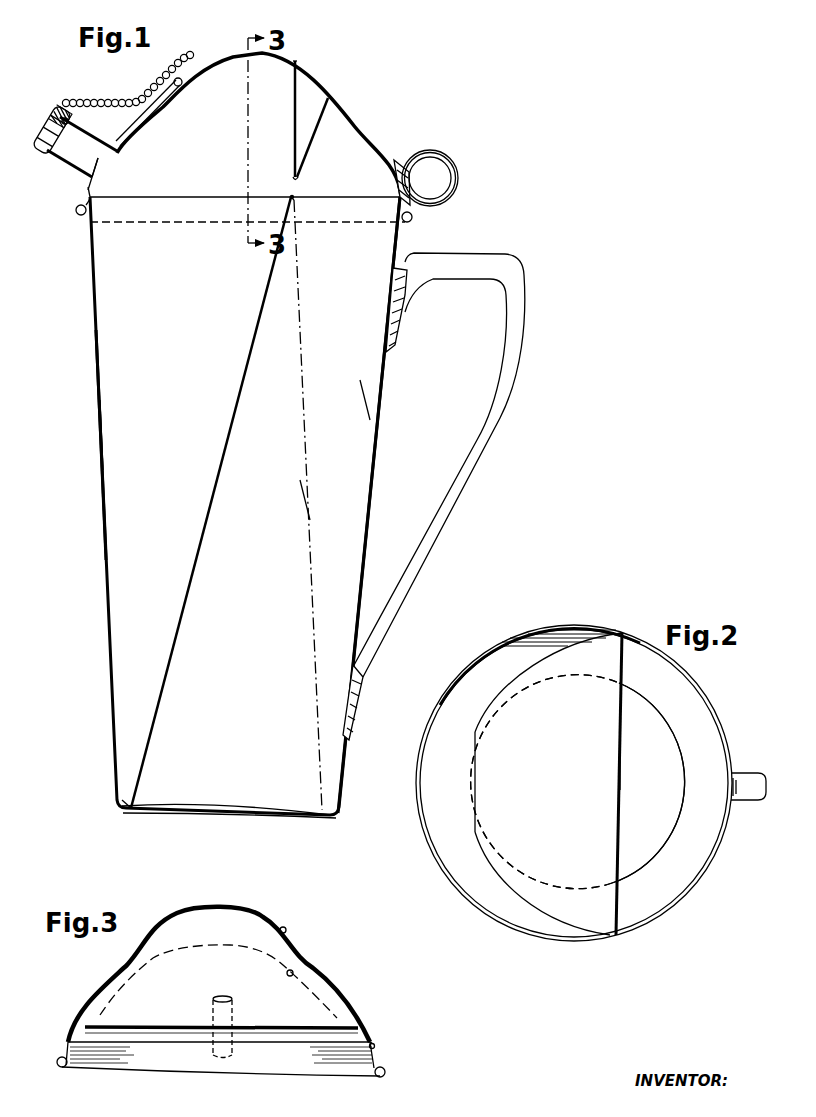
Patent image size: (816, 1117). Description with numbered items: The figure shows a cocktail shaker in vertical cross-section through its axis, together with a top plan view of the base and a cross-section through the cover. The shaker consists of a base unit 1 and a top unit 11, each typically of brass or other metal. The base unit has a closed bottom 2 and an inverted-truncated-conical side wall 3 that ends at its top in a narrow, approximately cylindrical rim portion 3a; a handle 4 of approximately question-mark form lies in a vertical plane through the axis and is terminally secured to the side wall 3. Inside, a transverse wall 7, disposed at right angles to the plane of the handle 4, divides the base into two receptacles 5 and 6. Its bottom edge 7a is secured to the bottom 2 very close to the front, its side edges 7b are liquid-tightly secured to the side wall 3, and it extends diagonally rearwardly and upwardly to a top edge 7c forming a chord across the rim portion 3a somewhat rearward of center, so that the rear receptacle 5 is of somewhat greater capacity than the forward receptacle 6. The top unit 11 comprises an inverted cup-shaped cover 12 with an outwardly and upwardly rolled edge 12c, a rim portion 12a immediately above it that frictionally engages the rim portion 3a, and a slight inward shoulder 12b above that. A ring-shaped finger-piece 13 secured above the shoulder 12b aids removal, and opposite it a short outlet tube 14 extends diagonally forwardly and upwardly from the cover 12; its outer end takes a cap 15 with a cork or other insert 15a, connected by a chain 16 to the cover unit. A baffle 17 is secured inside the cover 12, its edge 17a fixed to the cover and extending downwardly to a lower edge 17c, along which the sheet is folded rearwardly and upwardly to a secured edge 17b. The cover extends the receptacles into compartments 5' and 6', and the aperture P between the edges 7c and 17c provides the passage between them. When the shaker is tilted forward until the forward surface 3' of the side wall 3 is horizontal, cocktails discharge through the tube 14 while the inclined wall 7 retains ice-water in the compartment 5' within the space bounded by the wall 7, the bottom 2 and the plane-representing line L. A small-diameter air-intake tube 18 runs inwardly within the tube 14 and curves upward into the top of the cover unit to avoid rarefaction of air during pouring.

In FIG. 1, the base unit 1 is at (92, 543).
In FIG. 2, the base unit 1 is at (636, 620).
In FIG. 1, the closed bottom 2 is at (270, 810).
In FIG. 2, the closed bottom 2 is at (472, 781).
In FIG. 1, the side wall 3 is at (374, 505).
In FIG. 2, the side wall 3 is at (574, 769).
In FIG. 1, the forward surface of the side wall 3' is at (79, 285).
In FIG. 1, the rim portion 3a is at (92, 200).
In FIG. 2, the rim portion 3a is at (540, 625).
In FIG. 1, the handle 4 is at (410, 587).
In FIG. 2, the handle 4 is at (752, 800).
In FIG. 1, the receptacle 5 is at (351, 500).
In FIG. 2, the receptacle 5 is at (672, 789).
In FIG. 1, the compartment 5' is at (389, 395).
In FIG. 1, the receptacle 6 is at (97, 445).
In FIG. 2, the receptacle 6 is at (531, 801).
In FIG. 1, the compartment 6' is at (96, 431).
In FIG. 1, the transverse wall 7 is at (200, 575).
In FIG. 2, the transverse wall 7 is at (594, 741).
In FIG. 1, the bottom edge 7a is at (136, 808).
In FIG. 2, the bottom edge 7a is at (480, 797).
In FIG. 2, the side edges 7b is at (560, 644).
In FIG. 1, the top edge 7c is at (296, 200).
In FIG. 2, the top edge 7c is at (623, 768).
In FIG. 1, the top unit 11 is at (376, 131).
In FIG. 3, the top unit 11 is at (372, 1012).
In FIG. 1, the cover 12 is at (368, 110).
In FIG. 3, the cover 12 is at (331, 996).
In FIG. 1, the rim portion 12a is at (78, 206).
In FIG. 3, the rim portion 12a is at (380, 1062).
In FIG. 1, the shoulder 12b is at (92, 190).
In FIG. 3, the shoulder 12b is at (376, 1044).
In FIG. 1, the rolled edge 12c is at (412, 220).
In FIG. 3, the rolled edge 12c is at (386, 1072).
In FIG. 1, the finger-piece 13 is at (458, 176).
In FIG. 3, the finger-piece 13 is at (233, 1012).
In FIG. 1, the outlet tube 14 is at (82, 138).
In FIG. 1, the cap 15 is at (40, 152).
In FIG. 1, the insert 15a is at (60, 108).
In FIG. 1, the chain 16 is at (140, 86).
In FIG. 1, the baffle 17 is at (297, 120).
In FIG. 3, the baffle 17 is at (163, 1008).
In FIG. 1, the edge 17a is at (294, 70).
In FIG. 3, the edge 17a is at (288, 931).
In FIG. 1, the edge 17b is at (316, 132).
In FIG. 3, the edge 17b is at (296, 971).
In FIG. 1, the lower edge 17c is at (300, 177).
In FIG. 3, the lower edge 17c is at (295, 1035).
In FIG. 1, the air intake tube 18 is at (160, 107).
In FIG. 1, the plane-representing line L is at (313, 580).
In FIG. 1, the aperture P is at (292, 196).